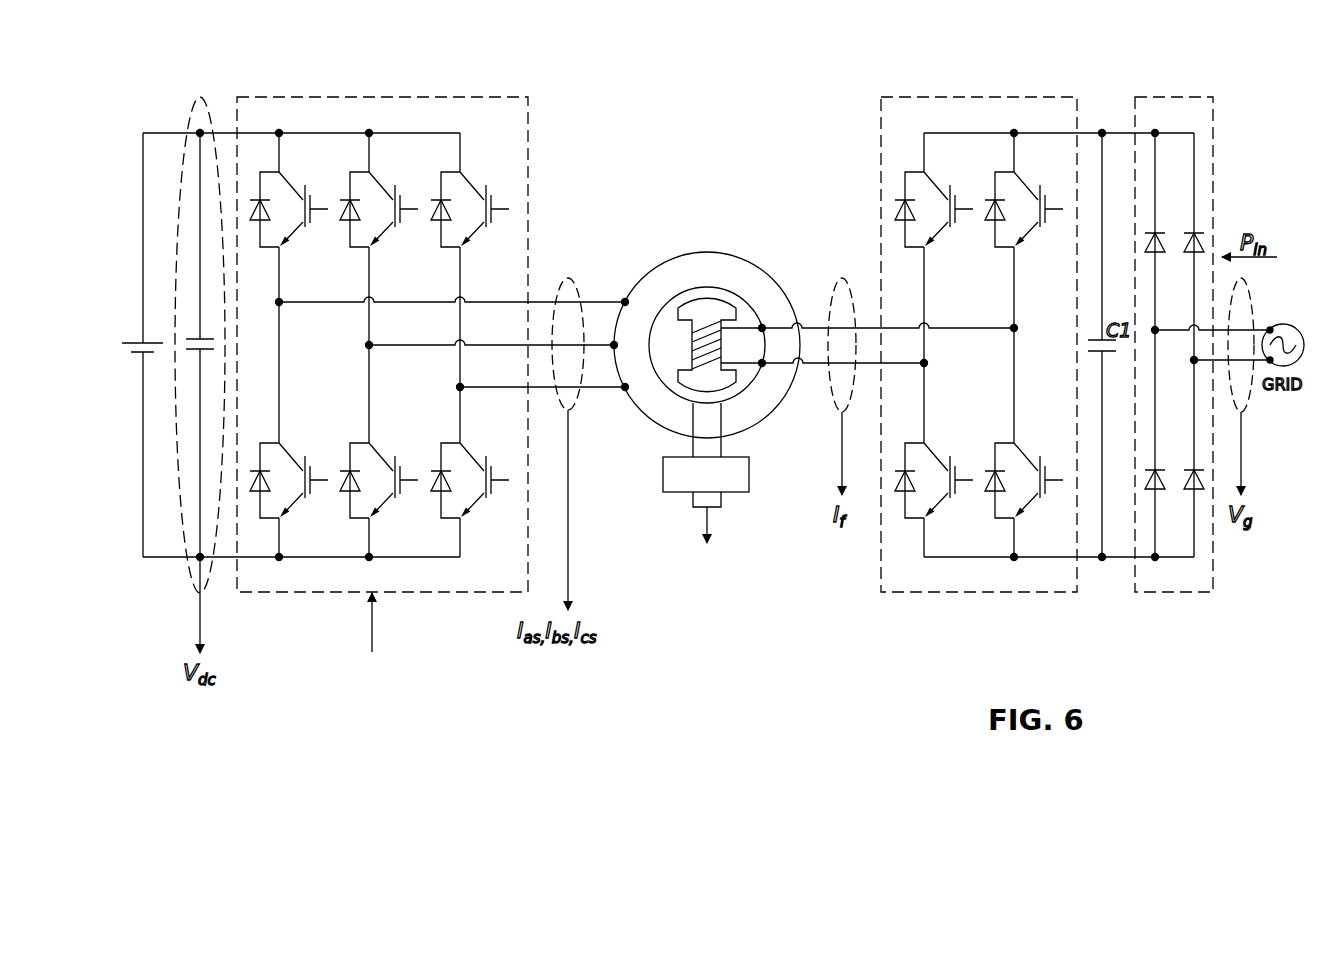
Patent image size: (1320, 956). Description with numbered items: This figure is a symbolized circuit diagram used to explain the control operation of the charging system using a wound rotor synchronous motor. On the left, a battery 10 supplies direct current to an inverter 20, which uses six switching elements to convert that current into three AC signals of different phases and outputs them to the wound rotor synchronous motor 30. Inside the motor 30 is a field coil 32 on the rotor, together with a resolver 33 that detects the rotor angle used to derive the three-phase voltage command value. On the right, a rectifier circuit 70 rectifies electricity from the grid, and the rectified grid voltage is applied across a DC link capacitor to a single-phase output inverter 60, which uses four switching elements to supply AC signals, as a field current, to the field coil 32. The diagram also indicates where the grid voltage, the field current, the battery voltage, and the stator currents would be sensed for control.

The battery 10 is at (135, 341).
The inverter 20 is at (408, 97).
The wound rotor synchronous motor 30 is at (665, 255).
The field coil 32 is at (704, 327).
The resolver 33 is at (738, 492).
The single-phase output inverter 60 is at (980, 97).
The rectifier circuit 70 is at (1178, 97).